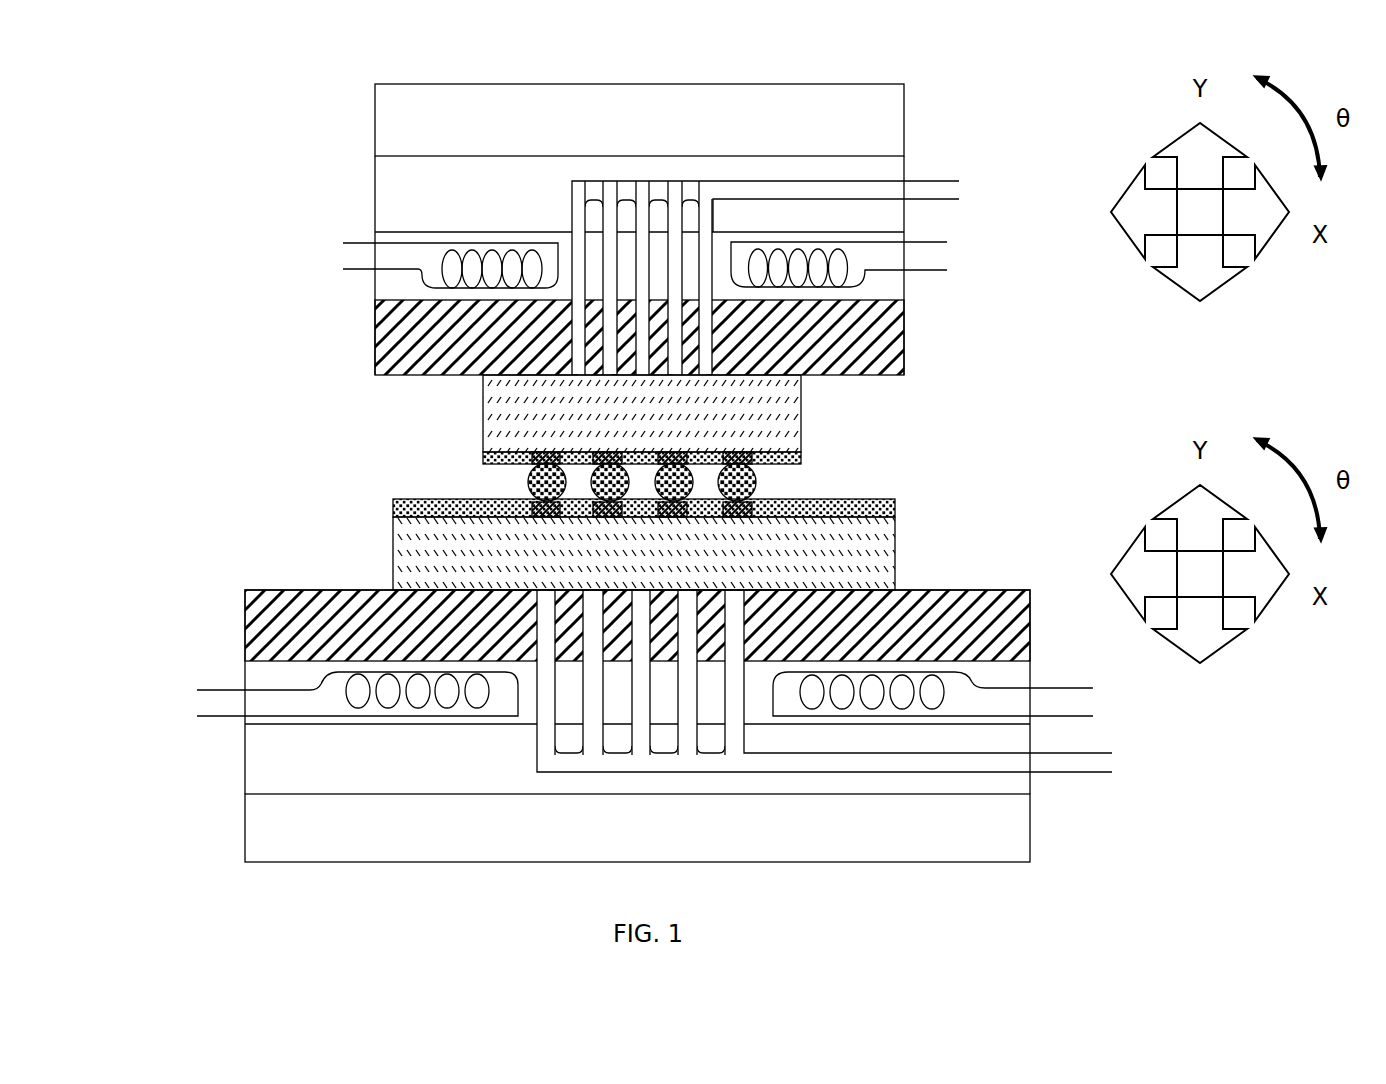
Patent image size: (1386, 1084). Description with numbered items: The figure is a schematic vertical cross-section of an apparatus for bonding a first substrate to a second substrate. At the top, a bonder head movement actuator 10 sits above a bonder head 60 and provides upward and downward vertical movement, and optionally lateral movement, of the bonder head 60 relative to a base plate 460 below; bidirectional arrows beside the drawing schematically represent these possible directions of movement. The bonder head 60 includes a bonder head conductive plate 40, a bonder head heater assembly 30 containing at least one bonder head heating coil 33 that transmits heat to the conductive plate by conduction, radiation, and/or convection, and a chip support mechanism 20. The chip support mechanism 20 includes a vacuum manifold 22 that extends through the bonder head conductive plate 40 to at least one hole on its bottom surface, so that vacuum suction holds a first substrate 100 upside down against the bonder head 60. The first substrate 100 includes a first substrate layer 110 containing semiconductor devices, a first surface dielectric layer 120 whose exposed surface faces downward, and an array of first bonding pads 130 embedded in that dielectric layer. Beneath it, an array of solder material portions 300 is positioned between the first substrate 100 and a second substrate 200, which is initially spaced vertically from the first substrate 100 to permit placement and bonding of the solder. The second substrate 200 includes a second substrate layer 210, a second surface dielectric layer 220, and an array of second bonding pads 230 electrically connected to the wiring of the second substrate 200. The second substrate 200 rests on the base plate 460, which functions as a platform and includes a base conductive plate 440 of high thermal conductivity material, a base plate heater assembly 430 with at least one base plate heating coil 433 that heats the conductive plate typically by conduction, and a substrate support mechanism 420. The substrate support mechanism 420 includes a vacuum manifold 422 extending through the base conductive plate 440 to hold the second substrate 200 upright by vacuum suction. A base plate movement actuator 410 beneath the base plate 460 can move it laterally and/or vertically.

The bonder head movement actuator 10 is at (635, 135).
The chip support mechanism 20 is at (985, 153).
The vacuum manifold 22 is at (915, 192).
The bonder head heater assembly 30 is at (985, 232).
The bonder head heating coil 33 is at (863, 280).
The bonder head conductive plate 40 is at (456, 350).
The bonder head 60 is at (330, 158).
The first substrate 100 is at (814, 380).
The first substrate layer 110 is at (570, 420).
The first surface dielectric layer 120 is at (483, 458).
The first bonding pads 130 is at (743, 452).
The second substrate 200 is at (905, 499).
The second substrate layer 210 is at (625, 568).
The second surface dielectric layer 220 is at (413, 507).
The second bonding pads 230 is at (548, 513).
The solder material portions 300 is at (756, 483).
The base plate movement actuator 410 is at (643, 841).
The substrate support mechanism 420 is at (1142, 797).
The vacuum manifold 422 is at (1043, 760).
The base plate heater assembly 430 is at (1142, 662).
The base plate heating coil 433 is at (975, 678).
The base conductive plate 440 is at (380, 640).
The base plate 460 is at (190, 588).